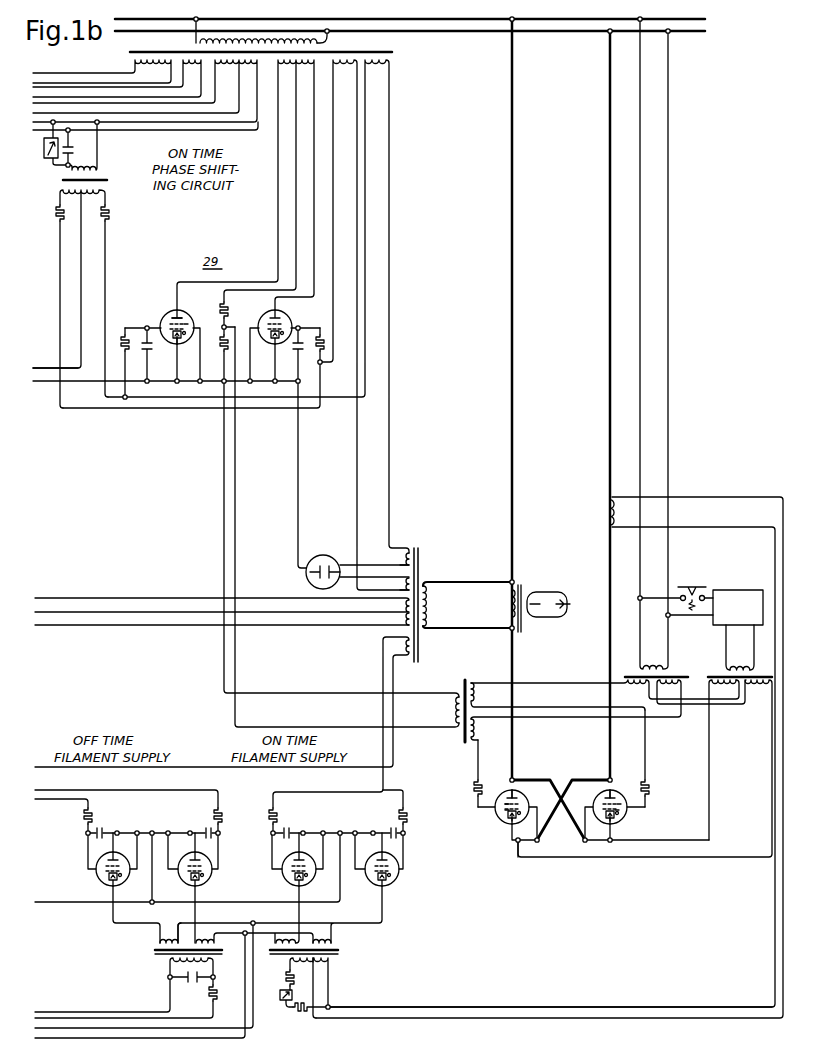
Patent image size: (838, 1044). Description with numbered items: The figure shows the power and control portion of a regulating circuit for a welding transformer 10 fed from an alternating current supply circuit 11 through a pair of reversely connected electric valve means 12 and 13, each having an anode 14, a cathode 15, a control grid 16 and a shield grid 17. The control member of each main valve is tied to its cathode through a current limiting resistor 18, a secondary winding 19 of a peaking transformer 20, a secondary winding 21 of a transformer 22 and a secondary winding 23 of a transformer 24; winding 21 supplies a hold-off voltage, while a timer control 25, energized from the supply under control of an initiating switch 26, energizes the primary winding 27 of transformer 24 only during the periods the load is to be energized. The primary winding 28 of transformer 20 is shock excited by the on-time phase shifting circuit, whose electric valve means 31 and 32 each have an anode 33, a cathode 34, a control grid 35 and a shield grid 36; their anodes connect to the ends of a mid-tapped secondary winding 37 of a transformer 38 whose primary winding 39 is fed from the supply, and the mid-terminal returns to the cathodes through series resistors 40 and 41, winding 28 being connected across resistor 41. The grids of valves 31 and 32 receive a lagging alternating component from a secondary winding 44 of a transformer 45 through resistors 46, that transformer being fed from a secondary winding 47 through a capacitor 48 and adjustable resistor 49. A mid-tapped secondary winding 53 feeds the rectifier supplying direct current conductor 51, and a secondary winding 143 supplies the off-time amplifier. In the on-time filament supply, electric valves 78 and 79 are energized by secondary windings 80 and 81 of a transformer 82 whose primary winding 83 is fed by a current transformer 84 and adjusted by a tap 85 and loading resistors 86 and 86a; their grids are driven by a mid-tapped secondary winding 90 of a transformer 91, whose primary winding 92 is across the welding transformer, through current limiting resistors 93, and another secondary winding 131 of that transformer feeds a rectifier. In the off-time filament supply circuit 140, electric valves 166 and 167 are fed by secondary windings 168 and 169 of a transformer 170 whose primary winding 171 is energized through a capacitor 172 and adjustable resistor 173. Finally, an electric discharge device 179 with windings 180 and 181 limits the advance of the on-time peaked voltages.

The welding transformer 10 is at (536, 586).
The alternating current supply circuit 11 is at (708, 22).
The electric valve means 12 is at (503, 828).
The electric valve means 13 is at (596, 804).
The anode 14 is at (518, 802).
The cathode 15 is at (512, 832).
The control grid 16 is at (505, 791).
The shield grid 17 is at (498, 815).
The current limiting resistor 18 is at (473, 786).
The secondary winding 19 is at (476, 692).
The transformer 20 is at (483, 673).
The secondary winding 21 is at (630, 690).
The transformer 22 is at (689, 670).
The secondary winding 23 is at (746, 695).
The transformer 24 is at (774, 670).
The timer control 25 is at (745, 590).
The initiating switch 26 is at (700, 588).
The primary winding 27 is at (747, 667).
The primary winding 28 is at (455, 710).
The electric valve means 31 is at (180, 312).
The electric valve means 32 is at (268, 312).
The anode 33 is at (172, 311).
The cathode 34 is at (173, 340).
The control grid 35 is at (130, 322).
The shield grid 36 is at (191, 320).
The secondary winding 37 is at (294, 64).
The transformer 38 is at (329, 45).
The primary winding 39 is at (196, 44).
The resistor 40 is at (228, 312).
The resistor 41 is at (219, 343).
The secondary winding 44 is at (104, 182).
The transformer 45 is at (124, 175).
The resistor 46 is at (55, 210).
The secondary winding 47 is at (145, 91).
The capacitor 48 is at (75, 146).
The adjustable resistor 49 is at (45, 161).
The conductor 51 is at (88, 613).
The secondary winding 53 is at (133, 61).
The electric valve 78 is at (284, 880).
The electric valve 79 is at (392, 880).
The secondary winding 80 is at (283, 939).
The secondary winding 81 is at (320, 939).
The transformer 82 is at (360, 961).
The primary winding 83 is at (289, 965).
The current transformer 84 is at (606, 510).
The adjustable tap 85 is at (325, 962).
The adjustable loading resistor 86 is at (302, 1015).
The adjustable loading resistor 86a is at (284, 1003).
The secondary winding 90 is at (409, 660).
The transformer 91 is at (443, 558).
The primary winding 92 is at (430, 604).
The current limiting resistor 93 is at (276, 814).
The secondary winding 131 is at (405, 619).
The off-time filament supply circuit 140 is at (160, 820).
The secondary winding 143 is at (120, 78).
The electric valve 166 is at (97, 880).
The electric valve 167 is at (212, 880).
The secondary winding 168 is at (170, 939).
The secondary winding 169 is at (210, 940).
The transformer 170 is at (152, 971).
The primary winding 171 is at (209, 960).
The capacitor 172 is at (192, 983).
The adjustable resistor 173 is at (217, 986).
The electric discharge device 179 is at (323, 556).
The winding 180 is at (405, 559).
The winding 181 is at (393, 68).